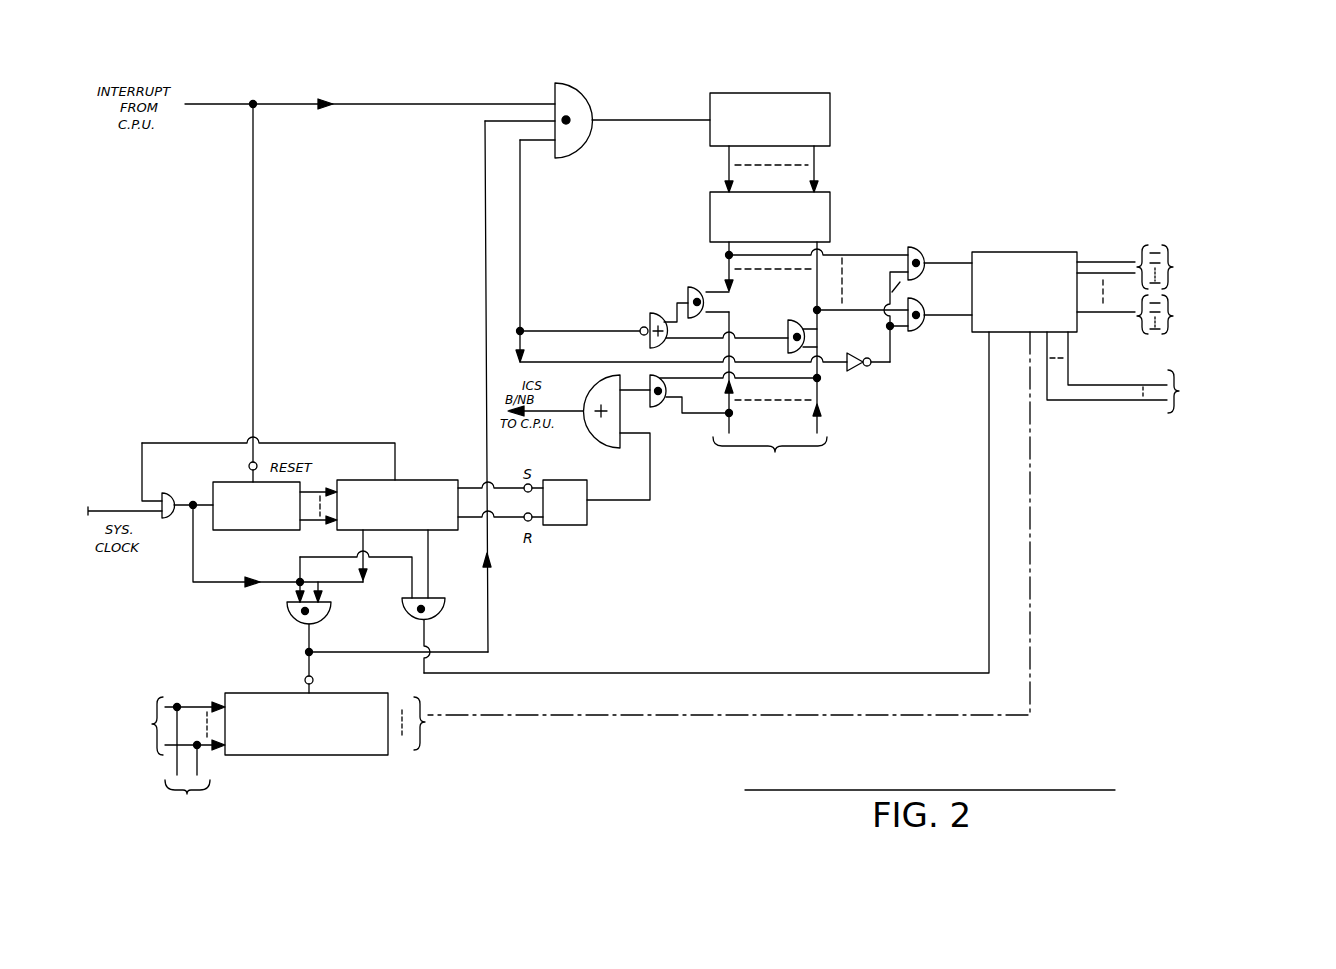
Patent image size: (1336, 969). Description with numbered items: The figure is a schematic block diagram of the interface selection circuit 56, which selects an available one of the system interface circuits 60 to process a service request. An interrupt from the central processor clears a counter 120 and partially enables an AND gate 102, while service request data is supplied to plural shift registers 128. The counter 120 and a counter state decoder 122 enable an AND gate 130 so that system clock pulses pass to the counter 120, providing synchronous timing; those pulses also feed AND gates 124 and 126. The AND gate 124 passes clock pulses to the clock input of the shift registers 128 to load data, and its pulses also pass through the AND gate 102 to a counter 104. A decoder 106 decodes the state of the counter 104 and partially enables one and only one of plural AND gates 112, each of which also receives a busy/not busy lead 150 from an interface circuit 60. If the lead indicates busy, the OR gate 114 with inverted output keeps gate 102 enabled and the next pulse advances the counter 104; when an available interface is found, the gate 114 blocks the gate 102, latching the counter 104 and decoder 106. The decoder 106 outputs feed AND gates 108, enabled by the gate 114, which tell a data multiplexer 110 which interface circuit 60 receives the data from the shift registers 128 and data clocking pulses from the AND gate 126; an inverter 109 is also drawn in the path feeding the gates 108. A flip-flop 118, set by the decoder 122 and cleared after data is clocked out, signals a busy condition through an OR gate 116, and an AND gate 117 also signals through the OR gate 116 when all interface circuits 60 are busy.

The AND gate 102 is at (567, 84).
The counter 104 is at (790, 93).
The decoder 106 is at (832, 222).
The AND gates 108 is at (958, 296).
The inverter 109 is at (856, 372).
The data multiplexer 110 is at (1030, 252).
The AND gates 112 is at (790, 325).
The OR gate 114 is at (648, 318).
The OR gate 116 is at (612, 445).
The AND gate 117 is at (664, 405).
The flip-flop 118 is at (572, 527).
The counter 120 is at (273, 533).
The counter state decoder 122 is at (405, 478).
The AND gate 124 is at (294, 620).
The AND gate 126 is at (410, 623).
The shift registers 128 is at (305, 757).
The AND gate 130 is at (164, 493).
The leads 150 is at (775, 415).
The interface selection circuit 56 is at (930, 779).
The interface circuits 60 is at (1170, 334).